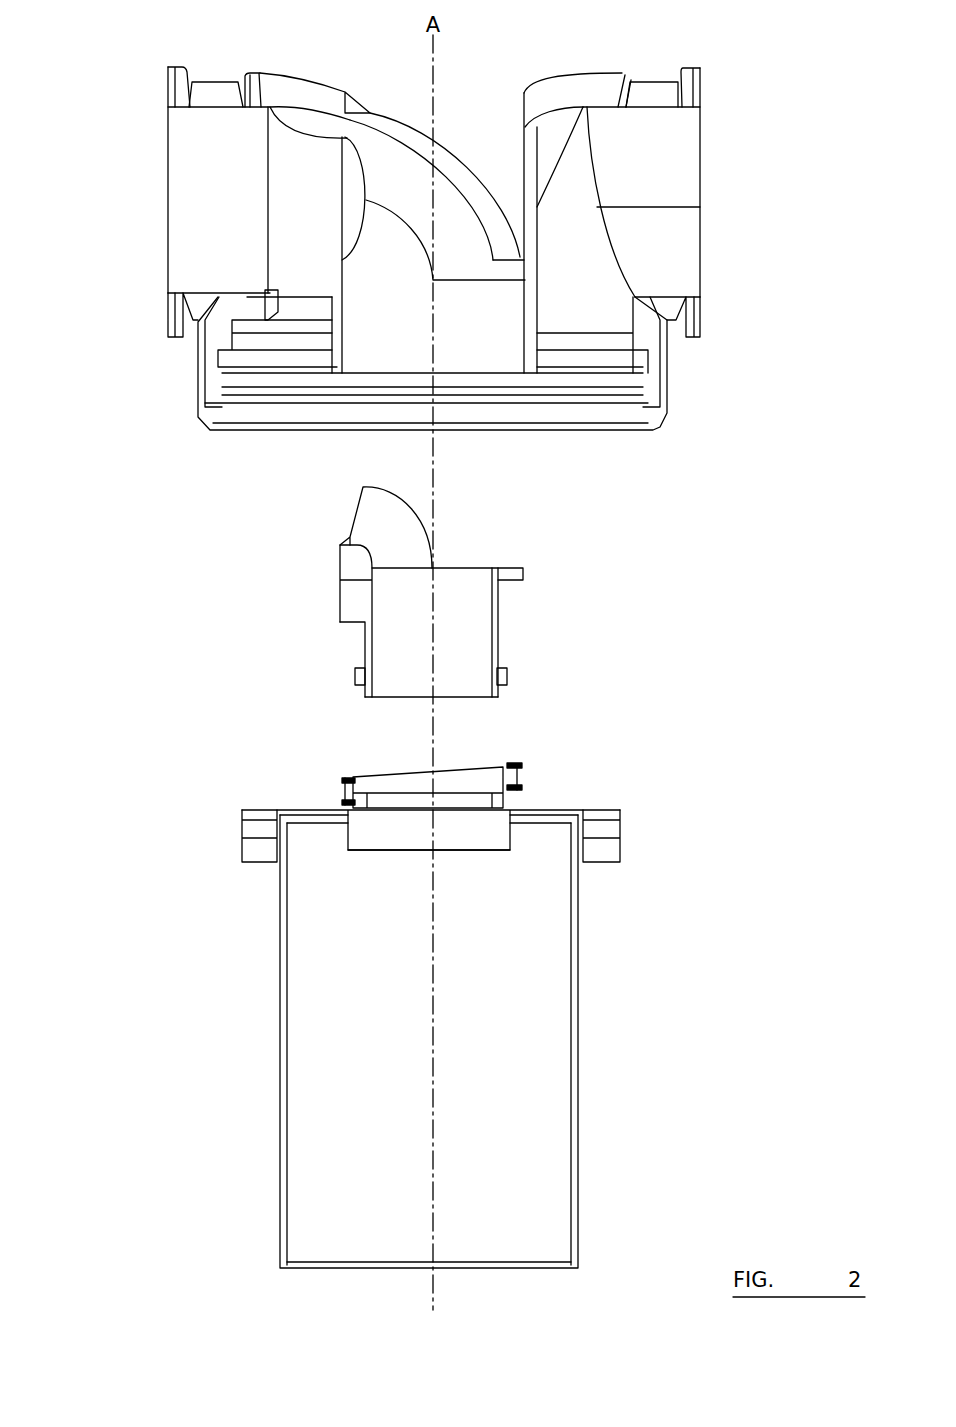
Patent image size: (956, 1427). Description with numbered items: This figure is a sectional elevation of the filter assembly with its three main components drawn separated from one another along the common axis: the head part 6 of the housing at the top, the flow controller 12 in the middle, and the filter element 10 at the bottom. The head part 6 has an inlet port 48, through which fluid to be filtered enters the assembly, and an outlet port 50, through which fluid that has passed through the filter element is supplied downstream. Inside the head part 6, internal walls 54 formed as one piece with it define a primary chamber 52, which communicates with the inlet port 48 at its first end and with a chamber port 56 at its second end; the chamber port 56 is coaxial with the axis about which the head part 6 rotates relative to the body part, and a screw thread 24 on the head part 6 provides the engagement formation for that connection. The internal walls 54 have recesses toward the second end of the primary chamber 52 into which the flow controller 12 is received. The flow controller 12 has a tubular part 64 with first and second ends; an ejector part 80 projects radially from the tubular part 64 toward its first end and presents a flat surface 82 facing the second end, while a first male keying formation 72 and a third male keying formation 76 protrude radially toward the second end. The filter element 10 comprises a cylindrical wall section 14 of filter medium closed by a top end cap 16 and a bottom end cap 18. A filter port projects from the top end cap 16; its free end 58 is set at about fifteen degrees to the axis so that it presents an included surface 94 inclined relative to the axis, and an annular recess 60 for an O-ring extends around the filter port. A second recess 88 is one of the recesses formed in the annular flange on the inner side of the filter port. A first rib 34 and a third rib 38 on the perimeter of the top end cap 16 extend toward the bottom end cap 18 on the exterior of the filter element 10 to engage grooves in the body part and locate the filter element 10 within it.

The head part 6 is at (578, 90).
The inlet port 48 is at (168, 147).
The outlet port 50 is at (703, 93).
The primary chamber 52 is at (297, 202).
The internal walls 54 is at (303, 283).
The included surface 94 is at (590, 262).
The chamber port 56 is at (370, 375).
The screw thread 24 is at (227, 390).
The flow controller 12 is at (493, 558).
The tubular part 64 is at (518, 630).
The ejector part 80 is at (350, 603).
The flat surface 82 is at (355, 622).
The first male keying formation 72 is at (355, 676).
The third male keying formation 76 is at (508, 678).
The free end 58 is at (387, 773).
The annular recess 60 is at (340, 793).
The top end cap 16 is at (545, 815).
The first rib 34 is at (257, 843).
The third rib 38 is at (607, 848).
The second recess 88 is at (457, 805).
The filter element 10 is at (579, 1046).
The wall section 14 is at (578, 1163).
The bottom end cap 18 is at (470, 1268).